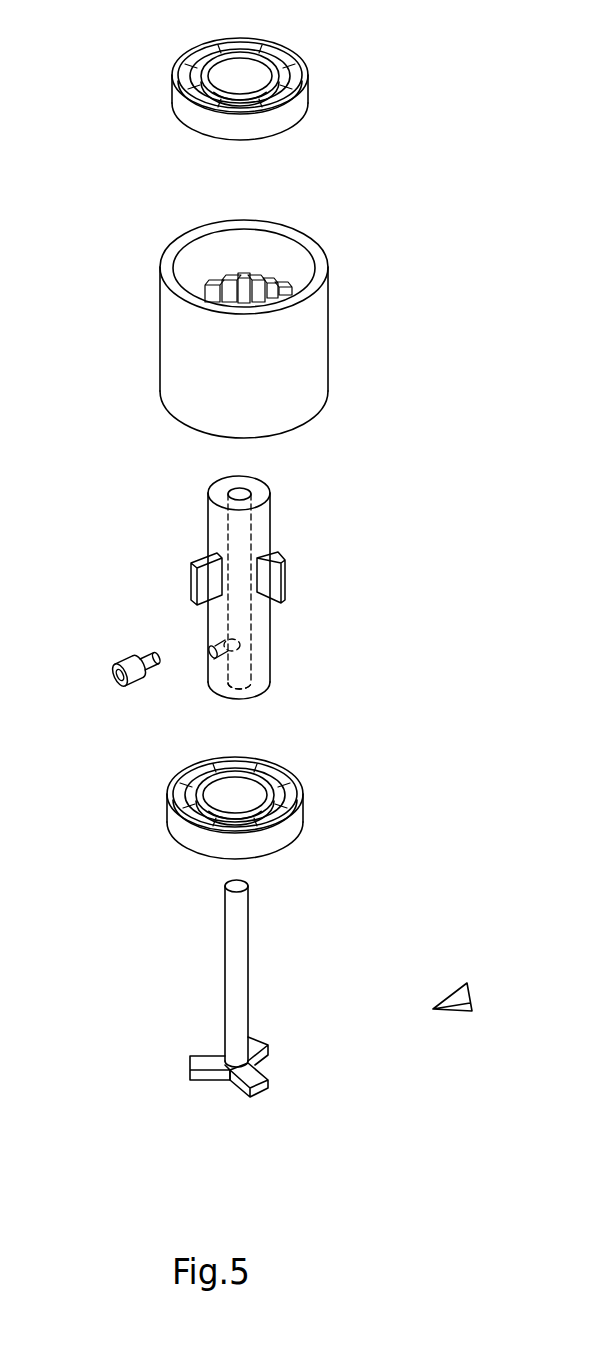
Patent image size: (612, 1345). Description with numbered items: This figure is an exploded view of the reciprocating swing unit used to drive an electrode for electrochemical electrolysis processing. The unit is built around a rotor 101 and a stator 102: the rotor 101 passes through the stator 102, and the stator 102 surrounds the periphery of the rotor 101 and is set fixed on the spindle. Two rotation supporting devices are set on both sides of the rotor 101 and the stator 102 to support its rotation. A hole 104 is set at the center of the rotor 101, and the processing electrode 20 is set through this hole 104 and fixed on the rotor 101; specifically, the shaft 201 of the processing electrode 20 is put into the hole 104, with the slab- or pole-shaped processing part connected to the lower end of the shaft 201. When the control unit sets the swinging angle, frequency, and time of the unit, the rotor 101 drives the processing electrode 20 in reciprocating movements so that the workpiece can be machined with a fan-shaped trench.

The processing electrode 20 is at (470, 1003).
The rotor 101 is at (262, 532).
The stator 102 is at (312, 343).
The hole 104 is at (240, 680).
The shaft 201 is at (238, 955).